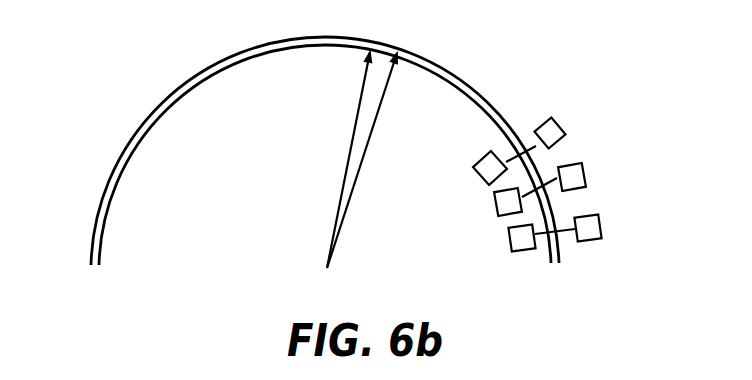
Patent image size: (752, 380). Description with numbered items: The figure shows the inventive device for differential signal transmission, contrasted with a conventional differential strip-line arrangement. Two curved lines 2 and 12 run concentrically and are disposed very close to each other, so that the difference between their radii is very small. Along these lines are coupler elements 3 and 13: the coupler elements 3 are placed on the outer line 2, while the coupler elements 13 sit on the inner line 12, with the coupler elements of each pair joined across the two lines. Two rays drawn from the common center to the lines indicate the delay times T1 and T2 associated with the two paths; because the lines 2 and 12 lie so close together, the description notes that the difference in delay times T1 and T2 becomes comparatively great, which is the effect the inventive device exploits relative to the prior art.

The line 2 is at (470, 93).
The line 12 is at (470, 93).
The coupler elements 13 is at (490, 168).
The coupler elements 3 is at (556, 135).
The first time-of-flight direction T1 is at (357, 118).
The second time-of-flight direction T2 is at (373, 127).